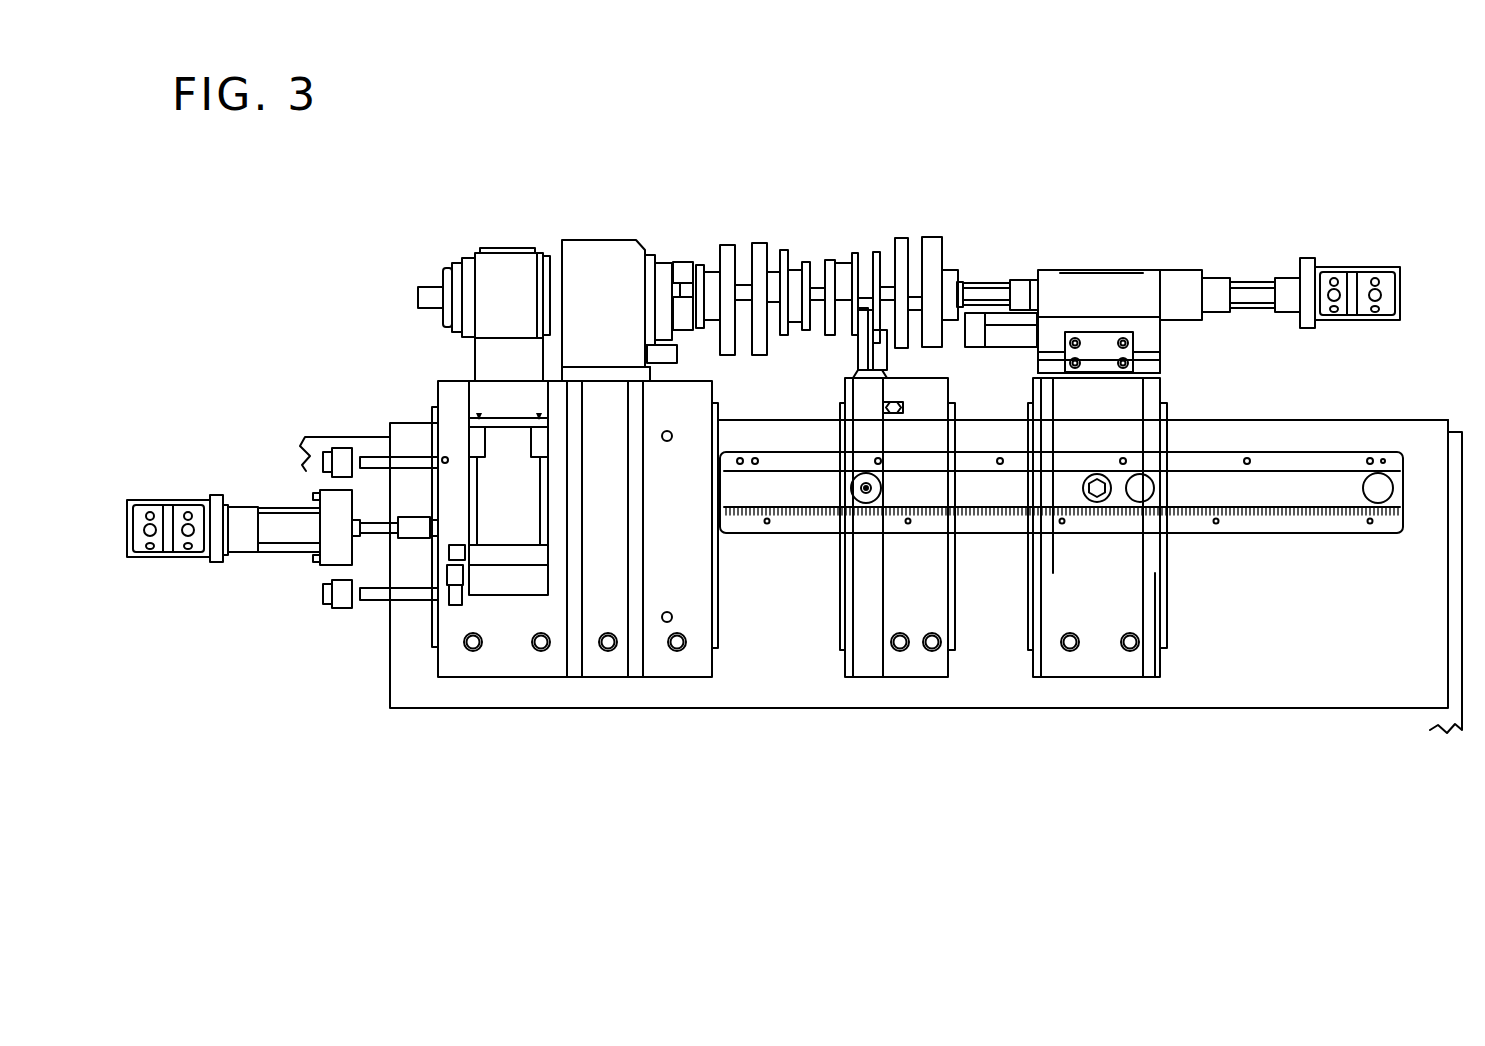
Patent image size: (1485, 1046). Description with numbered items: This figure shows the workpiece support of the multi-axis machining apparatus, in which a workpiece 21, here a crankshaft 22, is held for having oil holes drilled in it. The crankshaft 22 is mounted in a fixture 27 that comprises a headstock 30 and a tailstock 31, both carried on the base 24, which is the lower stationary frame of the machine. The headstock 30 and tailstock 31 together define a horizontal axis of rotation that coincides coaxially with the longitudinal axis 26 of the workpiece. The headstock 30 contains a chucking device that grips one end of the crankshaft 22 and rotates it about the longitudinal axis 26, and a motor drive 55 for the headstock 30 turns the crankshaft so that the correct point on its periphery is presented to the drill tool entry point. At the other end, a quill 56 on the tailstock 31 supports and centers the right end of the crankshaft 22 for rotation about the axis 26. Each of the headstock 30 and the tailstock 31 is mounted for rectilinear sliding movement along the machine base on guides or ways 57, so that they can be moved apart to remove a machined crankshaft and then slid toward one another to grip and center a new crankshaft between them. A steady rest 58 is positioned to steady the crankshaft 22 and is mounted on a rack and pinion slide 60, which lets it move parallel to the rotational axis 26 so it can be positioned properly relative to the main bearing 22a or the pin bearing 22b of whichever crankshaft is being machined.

The workpiece 21 is at (950, 228).
The crankshaft 22 is at (872, 236).
The main bearing 22a is at (834, 260).
The pin bearing 22b is at (851, 253).
The base 24 is at (1305, 417).
The longitudinal axis 26 is at (948, 300).
The fixture 27 is at (1135, 251).
The headstock 30 is at (600, 230).
The tailstock 31 is at (1068, 271).
The motor drive 55 is at (506, 262).
The quill 56 is at (1030, 277).
The guides or ways 57 is at (662, 367).
The steady rest 58 is at (858, 350).
The rack and pinion slide 60 is at (814, 441).